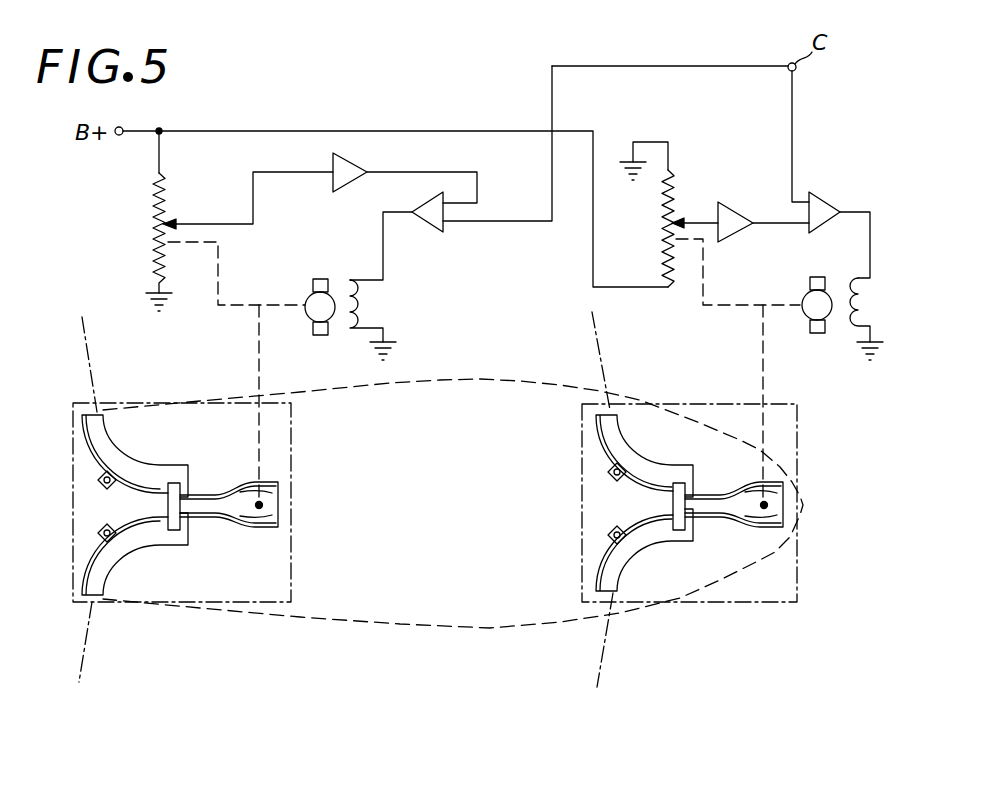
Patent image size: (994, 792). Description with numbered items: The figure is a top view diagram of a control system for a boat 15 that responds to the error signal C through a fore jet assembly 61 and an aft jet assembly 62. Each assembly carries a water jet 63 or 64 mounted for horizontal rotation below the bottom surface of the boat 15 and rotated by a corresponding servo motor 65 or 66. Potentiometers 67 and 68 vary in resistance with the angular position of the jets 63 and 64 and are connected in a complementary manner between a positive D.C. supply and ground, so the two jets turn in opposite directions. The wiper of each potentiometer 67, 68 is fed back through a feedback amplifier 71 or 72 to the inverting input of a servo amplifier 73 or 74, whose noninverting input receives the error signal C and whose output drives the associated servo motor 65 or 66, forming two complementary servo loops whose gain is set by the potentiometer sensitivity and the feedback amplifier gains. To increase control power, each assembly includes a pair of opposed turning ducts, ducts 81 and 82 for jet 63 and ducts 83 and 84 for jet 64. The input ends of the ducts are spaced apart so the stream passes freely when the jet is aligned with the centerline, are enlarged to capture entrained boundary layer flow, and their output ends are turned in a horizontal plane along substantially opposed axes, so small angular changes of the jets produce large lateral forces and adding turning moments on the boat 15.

The boat 15 is at (470, 381).
The fore jet assembly 61 is at (797, 432).
The aft jet assembly 62 is at (291, 495).
The water jet 63 is at (736, 494).
The water jet 64 is at (233, 488).
The servo motor 65 is at (805, 296).
The servo motor 66 is at (308, 297).
The potentiometer 67 is at (674, 194).
The potentiometer 68 is at (164, 206).
The feedback amplifier 71 is at (728, 208).
The feedback amplifier 72 is at (354, 162).
The servo amplifier 73 is at (826, 198).
The servo amplifier 74 is at (428, 228).
The turning duct 81 is at (646, 464).
The turning duct 82 is at (656, 548).
The turning duct 83 is at (140, 464).
The turning duct 84 is at (136, 546).